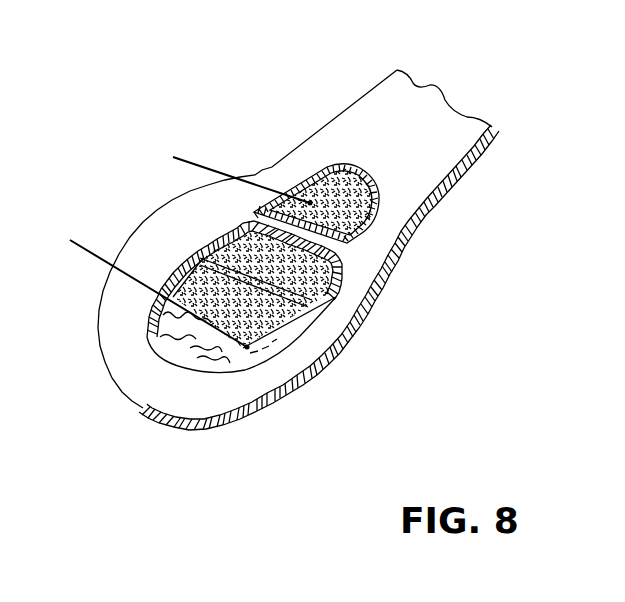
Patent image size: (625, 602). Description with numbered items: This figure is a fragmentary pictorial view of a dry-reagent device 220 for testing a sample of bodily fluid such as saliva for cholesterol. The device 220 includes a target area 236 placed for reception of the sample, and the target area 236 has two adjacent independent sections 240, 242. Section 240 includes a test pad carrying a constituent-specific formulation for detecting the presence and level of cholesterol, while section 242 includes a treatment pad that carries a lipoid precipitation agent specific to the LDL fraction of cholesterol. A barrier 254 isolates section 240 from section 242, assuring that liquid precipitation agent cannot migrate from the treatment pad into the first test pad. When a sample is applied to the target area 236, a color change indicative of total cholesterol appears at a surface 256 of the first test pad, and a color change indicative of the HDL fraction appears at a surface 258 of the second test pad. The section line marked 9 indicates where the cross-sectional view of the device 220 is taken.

The dry-reagent device 220 is at (366, 103).
The target area 236 is at (292, 300).
The section 240 is at (243, 352).
The section 242 is at (322, 275).
The barrier 254 is at (348, 293).
The surface of test pad 256 is at (203, 328).
The surface of test pad 258 is at (311, 202).
The section line 9- 9 is at (175, 243).